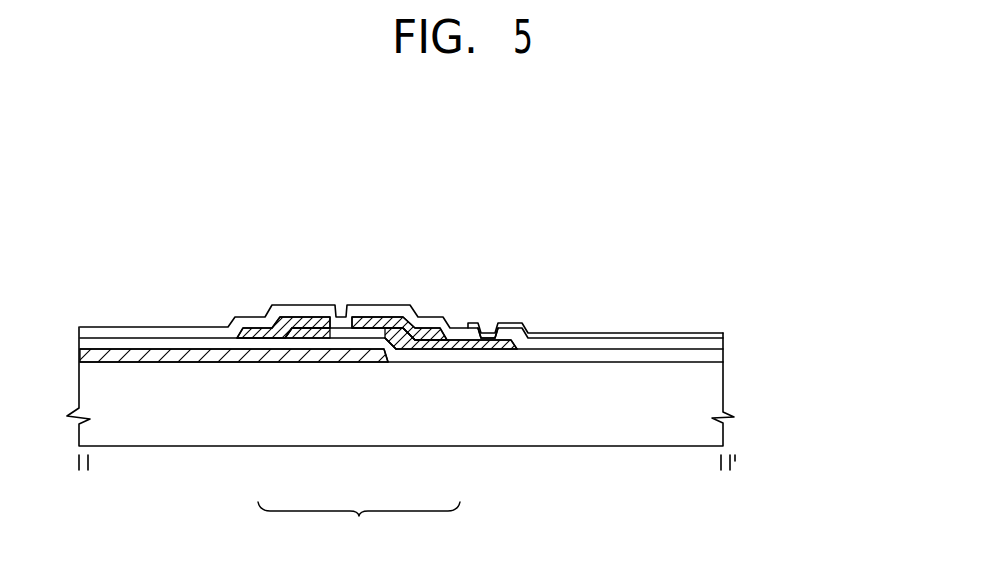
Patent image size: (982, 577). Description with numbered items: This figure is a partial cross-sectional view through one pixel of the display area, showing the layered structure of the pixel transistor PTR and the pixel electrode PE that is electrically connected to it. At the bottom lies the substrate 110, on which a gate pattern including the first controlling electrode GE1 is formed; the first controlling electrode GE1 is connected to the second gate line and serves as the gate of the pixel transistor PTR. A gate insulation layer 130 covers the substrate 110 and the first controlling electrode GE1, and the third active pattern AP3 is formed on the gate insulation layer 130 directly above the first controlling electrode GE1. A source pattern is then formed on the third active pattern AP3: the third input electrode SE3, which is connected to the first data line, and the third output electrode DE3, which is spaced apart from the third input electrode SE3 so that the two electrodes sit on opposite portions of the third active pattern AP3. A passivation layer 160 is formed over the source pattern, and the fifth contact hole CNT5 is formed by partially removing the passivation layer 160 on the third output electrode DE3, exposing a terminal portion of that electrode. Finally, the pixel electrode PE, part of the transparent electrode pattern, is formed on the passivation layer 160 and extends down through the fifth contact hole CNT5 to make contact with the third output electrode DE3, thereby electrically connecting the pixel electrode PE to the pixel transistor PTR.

The substrate 110 is at (718, 382).
The gate insulation layer 130 is at (718, 353).
The passivation layer 160 is at (717, 343).
The first controlling electrode GE1 is at (336, 357).
The third active pattern AP3 is at (405, 343).
The third input electrode SE3 is at (292, 329).
The third output electrode DE3 is at (386, 330).
The fifth contact hole CNT5 is at (483, 318).
The pixel electrode PE is at (590, 338).
The pixel transistor PTR is at (359, 523).